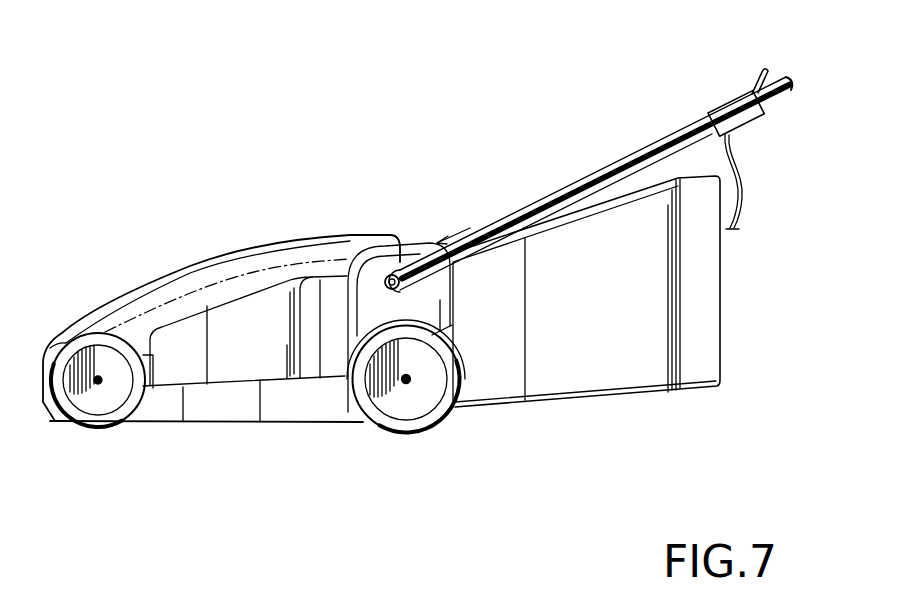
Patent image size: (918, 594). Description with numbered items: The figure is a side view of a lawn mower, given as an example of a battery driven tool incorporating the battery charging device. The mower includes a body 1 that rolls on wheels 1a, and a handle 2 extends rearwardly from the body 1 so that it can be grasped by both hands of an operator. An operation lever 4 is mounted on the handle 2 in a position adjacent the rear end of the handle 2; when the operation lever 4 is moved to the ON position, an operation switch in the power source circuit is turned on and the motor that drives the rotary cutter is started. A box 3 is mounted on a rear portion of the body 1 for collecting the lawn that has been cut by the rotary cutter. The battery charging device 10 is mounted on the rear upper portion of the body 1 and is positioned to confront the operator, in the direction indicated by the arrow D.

The body 1 is at (250, 263).
The wheels 1a is at (100, 403).
The handle 2 is at (563, 189).
The box 3 is at (600, 353).
The operation lever 4 is at (763, 74).
The battery charging device 10 is at (425, 245).
The arrow D is at (463, 223).